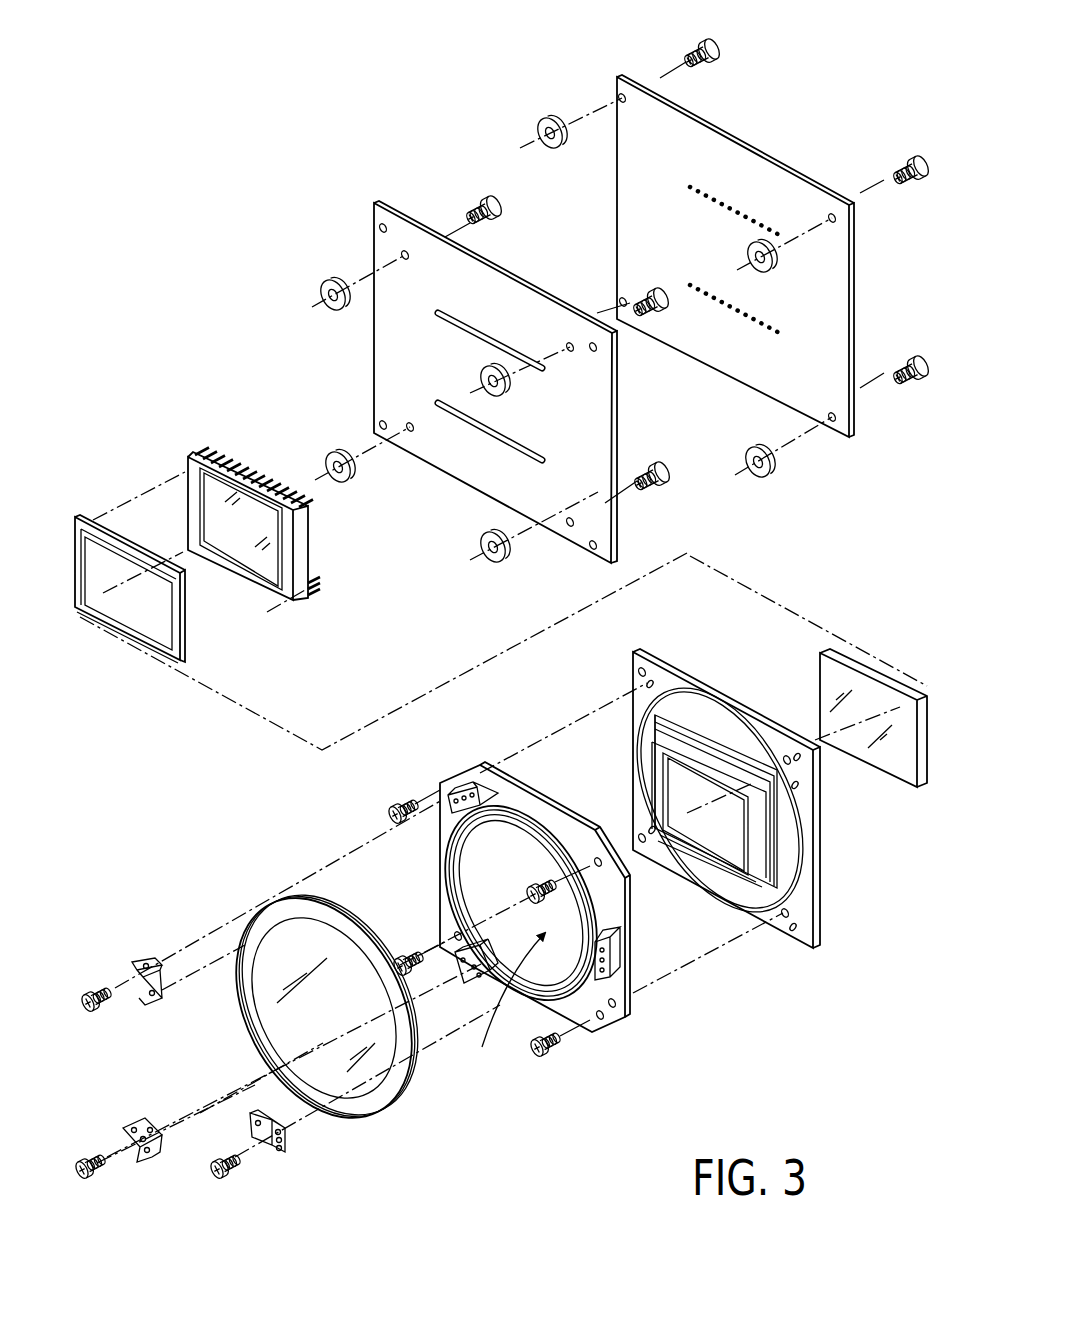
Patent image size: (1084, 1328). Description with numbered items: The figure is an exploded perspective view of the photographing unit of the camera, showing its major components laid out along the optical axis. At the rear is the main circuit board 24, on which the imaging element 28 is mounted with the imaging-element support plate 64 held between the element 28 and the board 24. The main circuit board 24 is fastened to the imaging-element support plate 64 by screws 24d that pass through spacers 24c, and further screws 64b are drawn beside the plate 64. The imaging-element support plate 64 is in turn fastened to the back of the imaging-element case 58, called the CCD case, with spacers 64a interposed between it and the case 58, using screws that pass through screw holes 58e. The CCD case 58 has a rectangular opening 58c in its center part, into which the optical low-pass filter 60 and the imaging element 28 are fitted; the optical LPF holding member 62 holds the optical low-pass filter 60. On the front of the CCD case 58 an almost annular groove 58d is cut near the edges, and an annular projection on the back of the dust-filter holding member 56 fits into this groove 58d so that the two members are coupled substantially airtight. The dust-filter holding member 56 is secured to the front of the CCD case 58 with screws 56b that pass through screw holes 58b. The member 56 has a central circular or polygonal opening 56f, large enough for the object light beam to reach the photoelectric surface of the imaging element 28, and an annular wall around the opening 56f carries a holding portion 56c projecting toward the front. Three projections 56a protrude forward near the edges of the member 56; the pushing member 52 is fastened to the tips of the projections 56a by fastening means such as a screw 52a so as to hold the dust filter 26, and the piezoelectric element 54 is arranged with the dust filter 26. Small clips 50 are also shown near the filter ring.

The main circuit board 24 is at (765, 176).
The spacer 24c is at (546, 117).
The screw 24d is at (724, 46).
The dust filter 26 is at (347, 1085).
The imaging element 28 is at (187, 495).
The clip 50 is at (148, 1160).
The pushing member 52 is at (148, 955).
The screw 52a is at (100, 1155).
The piezoelectric element 54 is at (409, 1078).
The dust-filter holding member 56 is at (627, 998).
The projection 56a is at (470, 788).
The screw 56b is at (402, 806).
The holding portion 56c is at (557, 988).
The opening 56f is at (497, 1000).
The imaging-element case 58 is at (818, 893).
The screw hole 58b is at (650, 667).
The rectangular opening 58c is at (731, 838).
The annular groove 58d is at (680, 692).
The screw hole 58e is at (645, 681).
The optical low-pass filter 60 is at (904, 775).
The optical LPF holding member 62 is at (188, 598).
The imaging-element support plate 64 is at (520, 300).
The spacer 64a is at (323, 460).
The screw 64b is at (483, 197).